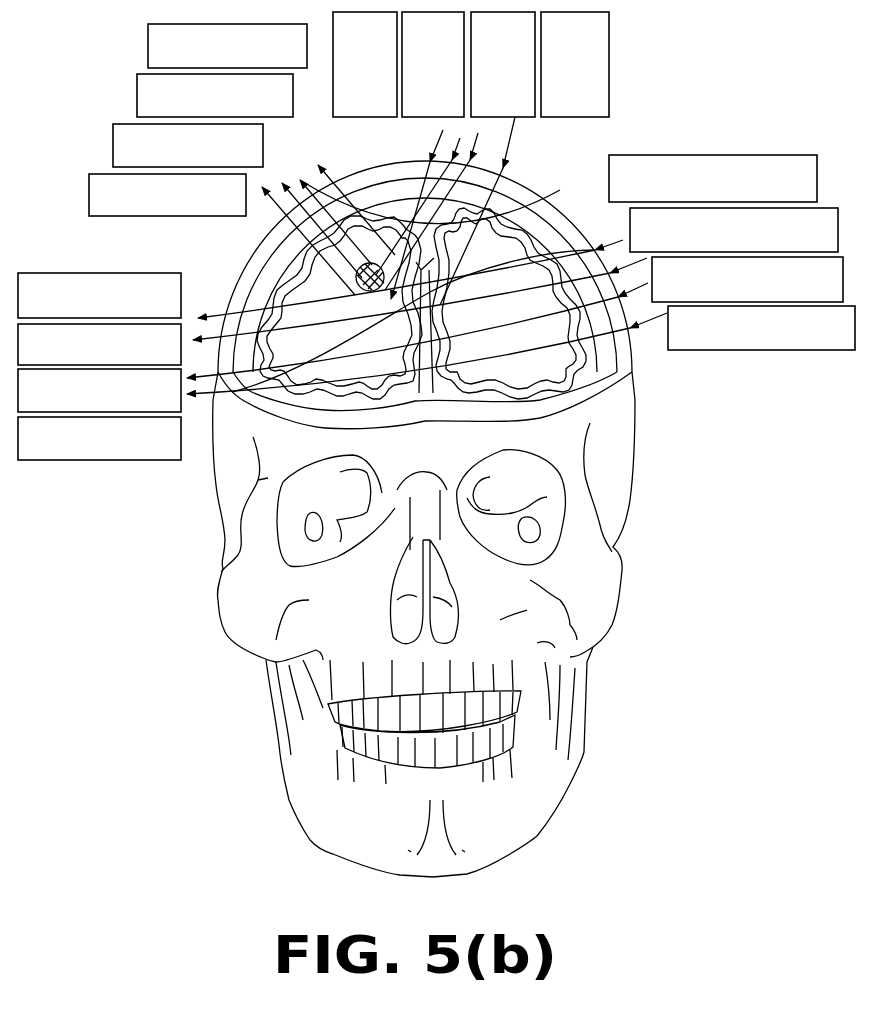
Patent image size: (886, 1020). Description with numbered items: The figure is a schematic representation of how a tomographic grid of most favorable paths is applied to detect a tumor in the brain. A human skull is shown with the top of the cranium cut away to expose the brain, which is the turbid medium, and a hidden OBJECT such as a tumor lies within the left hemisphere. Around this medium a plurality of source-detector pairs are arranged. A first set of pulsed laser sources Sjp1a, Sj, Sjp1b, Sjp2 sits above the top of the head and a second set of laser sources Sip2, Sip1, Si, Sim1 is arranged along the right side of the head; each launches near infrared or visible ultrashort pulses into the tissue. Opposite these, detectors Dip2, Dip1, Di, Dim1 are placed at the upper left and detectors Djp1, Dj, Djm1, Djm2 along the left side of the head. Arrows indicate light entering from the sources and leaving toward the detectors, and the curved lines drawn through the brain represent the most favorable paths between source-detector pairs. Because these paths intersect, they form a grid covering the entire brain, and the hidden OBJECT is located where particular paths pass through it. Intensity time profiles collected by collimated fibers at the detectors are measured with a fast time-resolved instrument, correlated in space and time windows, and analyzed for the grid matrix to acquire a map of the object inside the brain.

The object OBJECT is at (356, 275).
The detector D(i+2) Dip2 is at (227, 46).
The detector D(i+1) Dip1 is at (215, 95).
The detector D(i) Di is at (188, 145).
The detector D(i-1) Dim1 is at (167, 195).
The detector D(j+1) Djp1 is at (99, 295).
The detector D(j) Dj is at (99, 344).
The detector D(j-1) Djm1 is at (99, 390).
The detector D(j-2) Djm2 is at (99, 438).
The laser source S(j+1) Sjp1a is at (365, 64).
The laser source S(j) Sj is at (433, 64).
The laser source S(j+1) Sjp1b is at (503, 64).
The laser source S(j+2) Sjp2 is at (575, 64).
The laser source S(i+2) Sip2 is at (713, 178).
The laser source S(i+1) Sip1 is at (734, 230).
The laser source S(i) Si is at (747, 279).
The laser source S(i-1) Sim1 is at (761, 328).